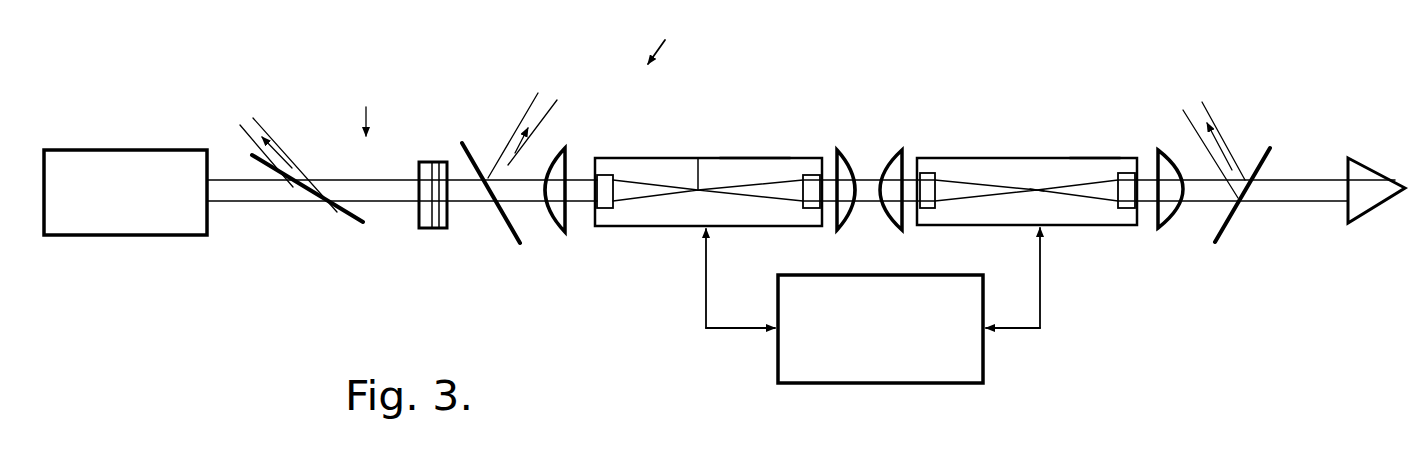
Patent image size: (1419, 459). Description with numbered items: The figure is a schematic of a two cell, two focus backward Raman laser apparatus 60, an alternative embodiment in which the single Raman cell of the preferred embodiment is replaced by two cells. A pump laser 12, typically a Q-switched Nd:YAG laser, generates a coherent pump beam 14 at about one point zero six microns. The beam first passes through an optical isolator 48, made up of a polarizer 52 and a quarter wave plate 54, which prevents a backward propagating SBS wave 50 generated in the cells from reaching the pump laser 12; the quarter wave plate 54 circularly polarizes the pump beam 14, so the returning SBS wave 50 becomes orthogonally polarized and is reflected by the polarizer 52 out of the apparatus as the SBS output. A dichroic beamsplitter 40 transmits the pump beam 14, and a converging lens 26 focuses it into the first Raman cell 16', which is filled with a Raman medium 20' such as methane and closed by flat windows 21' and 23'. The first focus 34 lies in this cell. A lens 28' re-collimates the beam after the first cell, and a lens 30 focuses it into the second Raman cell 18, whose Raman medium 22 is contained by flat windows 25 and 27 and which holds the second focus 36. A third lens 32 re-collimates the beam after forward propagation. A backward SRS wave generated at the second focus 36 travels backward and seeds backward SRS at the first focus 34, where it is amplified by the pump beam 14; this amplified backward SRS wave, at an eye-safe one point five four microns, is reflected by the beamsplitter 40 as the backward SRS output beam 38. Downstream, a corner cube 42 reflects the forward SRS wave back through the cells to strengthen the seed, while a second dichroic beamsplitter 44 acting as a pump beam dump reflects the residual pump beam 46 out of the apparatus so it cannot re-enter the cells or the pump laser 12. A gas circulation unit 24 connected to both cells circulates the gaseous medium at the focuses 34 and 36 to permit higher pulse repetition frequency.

The pump laser 12 is at (72, 150).
The pump beam 14 is at (242, 202).
The first Raman cell 16' is at (708, 168).
The second Raman cell 18 is at (1043, 157).
The Raman medium of first cell 20' is at (755, 137).
The flat window of first cell 21' is at (609, 163).
The Raman medium of second cell 22 is at (1102, 162).
The flat window of first cell 23' is at (805, 146).
The gas circulation unit 24 is at (778, 383).
The flat window of second cell 25 is at (928, 173).
The converging lens 26 is at (568, 152).
The flat window of second cell 27 is at (1133, 170).
The re-collimating lens 28' is at (843, 157).
The focusing lens 30 is at (900, 150).
The third lens 32 is at (1157, 228).
The first focus 34 is at (697, 158).
The second focus 36 is at (1037, 188).
The output beam 38 is at (508, 163).
The dichroic beamsplitter 40 is at (465, 143).
The corner cube 42 is at (1360, 158).
The dichroic beamsplitter 44 is at (1217, 224).
The residual pump beam 46 is at (1225, 140).
The optical isolator 48 is at (368, 105).
The SBS wave 50 is at (285, 148).
The polarizer 52 is at (340, 216).
The quarter wave plate 54 is at (420, 162).
The two cell, two focus Raman laser apparatus 60 is at (663, 37).